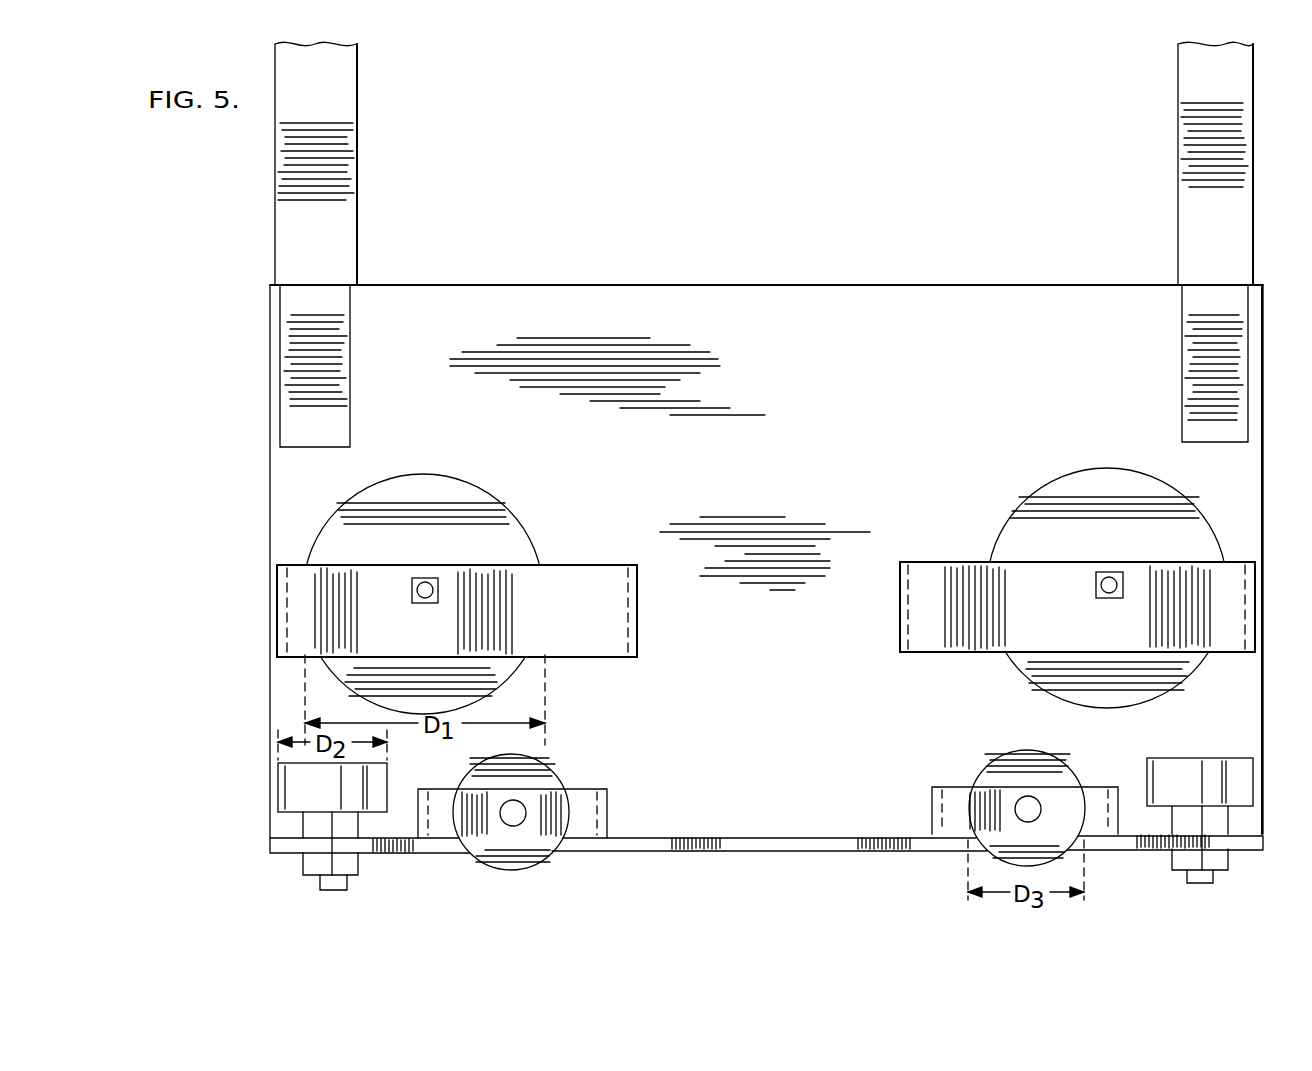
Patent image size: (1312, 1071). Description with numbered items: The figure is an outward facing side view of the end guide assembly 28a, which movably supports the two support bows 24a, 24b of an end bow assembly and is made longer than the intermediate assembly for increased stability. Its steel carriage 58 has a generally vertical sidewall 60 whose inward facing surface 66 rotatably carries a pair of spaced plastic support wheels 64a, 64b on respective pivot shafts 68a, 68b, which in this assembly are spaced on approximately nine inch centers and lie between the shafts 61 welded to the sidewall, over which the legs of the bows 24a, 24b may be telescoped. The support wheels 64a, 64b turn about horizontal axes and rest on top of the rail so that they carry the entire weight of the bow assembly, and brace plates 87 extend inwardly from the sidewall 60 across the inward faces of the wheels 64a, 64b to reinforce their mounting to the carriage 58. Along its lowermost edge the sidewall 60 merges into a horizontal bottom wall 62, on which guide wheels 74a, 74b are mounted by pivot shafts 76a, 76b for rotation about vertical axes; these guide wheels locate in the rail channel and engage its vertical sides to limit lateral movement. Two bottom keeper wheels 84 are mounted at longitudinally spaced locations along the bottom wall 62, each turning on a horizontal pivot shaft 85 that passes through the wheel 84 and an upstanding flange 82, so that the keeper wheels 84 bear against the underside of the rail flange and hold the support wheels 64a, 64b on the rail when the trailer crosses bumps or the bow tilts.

The support bow 24a is at (345, 104).
The support bow 24b is at (1190, 80).
The end guide assembly 28a is at (1023, 255).
The carriage 58 is at (566, 298).
The sidewall 60 is at (740, 298).
The shaft 61 is at (328, 360).
The bottom wall 62 is at (768, 838).
The support wheel 64a is at (1030, 518).
The support wheel 64b is at (497, 518).
The inward facing surface 66 is at (828, 361).
The pivot shaft 68a is at (1100, 580).
The pivot shaft 68b is at (412, 592).
The guide wheel 74a is at (1212, 768).
The guide wheel 74b is at (290, 780).
The pivot shaft 76a is at (1212, 880).
The pivot shaft 76b is at (322, 884).
The flange 82 is at (585, 795).
The keeper wheel 84 is at (548, 777).
The pivot shaft 85 is at (517, 820).
The brace plate 87 is at (603, 643).